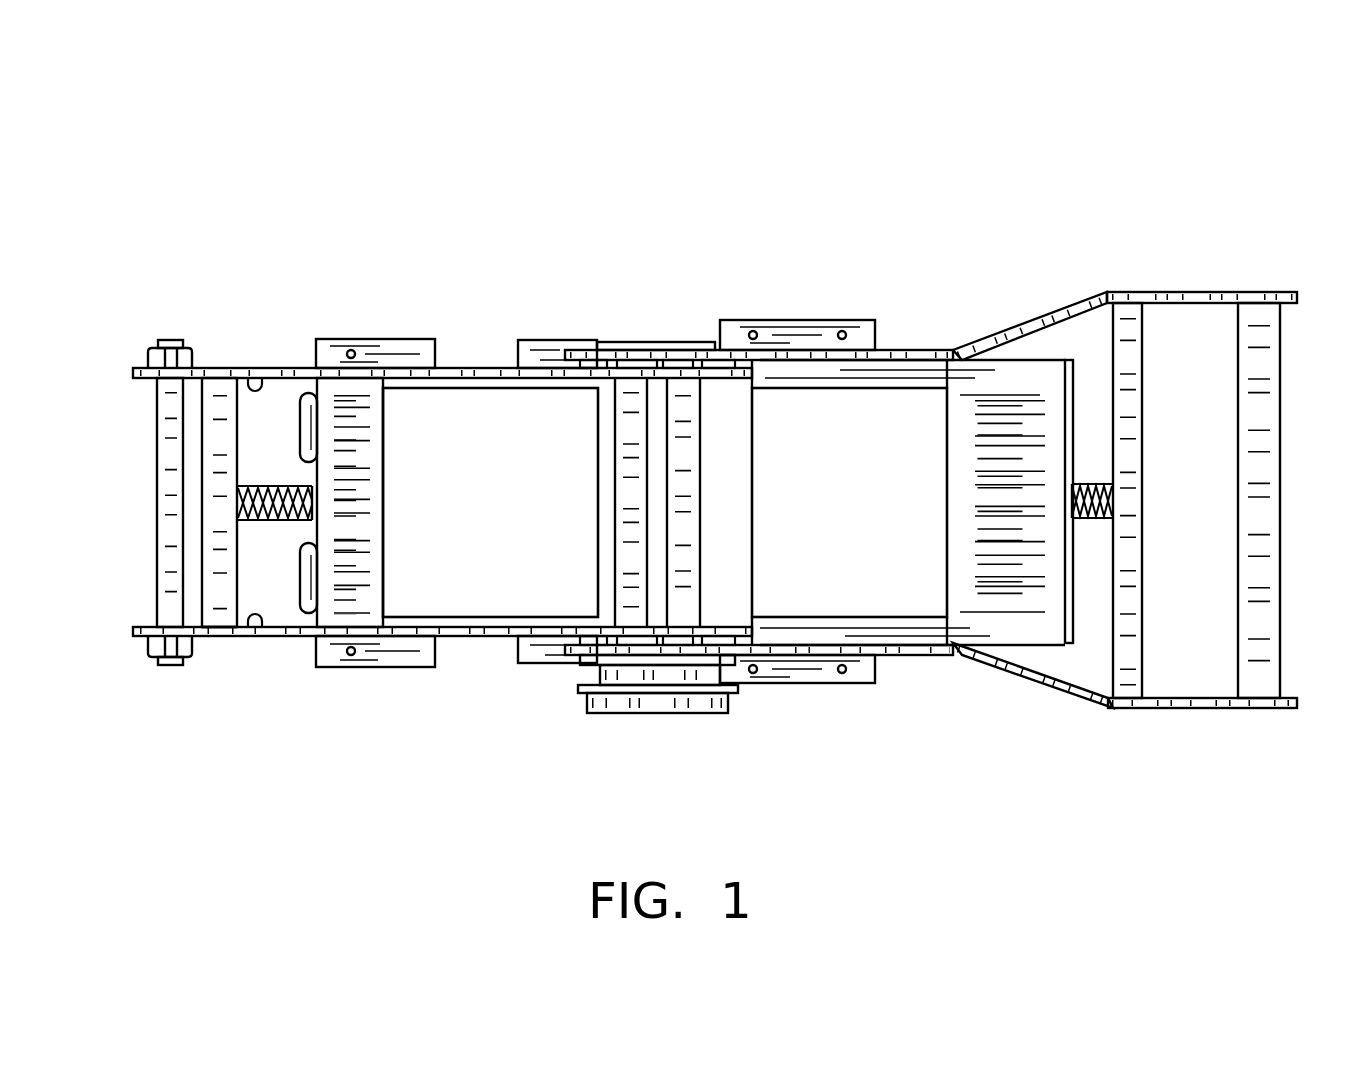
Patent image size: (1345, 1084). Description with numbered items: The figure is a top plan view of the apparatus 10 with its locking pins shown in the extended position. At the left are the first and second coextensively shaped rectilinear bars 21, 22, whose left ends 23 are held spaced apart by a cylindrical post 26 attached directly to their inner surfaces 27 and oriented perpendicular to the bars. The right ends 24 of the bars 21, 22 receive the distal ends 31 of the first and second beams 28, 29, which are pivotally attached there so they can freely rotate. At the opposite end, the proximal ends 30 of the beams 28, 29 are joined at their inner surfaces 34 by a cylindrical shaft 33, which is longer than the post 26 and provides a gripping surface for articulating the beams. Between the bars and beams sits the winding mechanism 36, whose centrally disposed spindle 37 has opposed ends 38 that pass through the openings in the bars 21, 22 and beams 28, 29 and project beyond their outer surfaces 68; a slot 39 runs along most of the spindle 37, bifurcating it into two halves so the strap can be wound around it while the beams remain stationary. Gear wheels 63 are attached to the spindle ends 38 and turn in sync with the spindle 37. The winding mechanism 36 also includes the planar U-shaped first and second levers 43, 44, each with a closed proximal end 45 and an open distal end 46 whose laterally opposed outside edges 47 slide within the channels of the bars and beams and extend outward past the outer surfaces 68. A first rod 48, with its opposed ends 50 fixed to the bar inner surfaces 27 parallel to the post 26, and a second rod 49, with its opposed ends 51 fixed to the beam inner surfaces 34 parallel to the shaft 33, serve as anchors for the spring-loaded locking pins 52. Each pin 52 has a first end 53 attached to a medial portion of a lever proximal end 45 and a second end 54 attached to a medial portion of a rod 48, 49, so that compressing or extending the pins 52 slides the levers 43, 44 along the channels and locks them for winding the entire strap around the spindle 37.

The apparatus 10 is at (222, 196).
The first bar 21 is at (233, 368).
The second bar 22 is at (232, 640).
The left ends 23 is at (133, 368).
The right ends 24 is at (742, 375).
The cylindrical post 26 is at (160, 497).
The inner surfaces 27 is at (257, 378).
The first beam 28 is at (1072, 310).
The second beam 29 is at (1077, 690).
The proximal ends 30 is at (1297, 295).
The distal ends 31 is at (560, 355).
The cylindrical shaft 33 is at (1268, 545).
The inner surfaces 34 is at (1222, 305).
The winding mechanism 36 is at (578, 733).
The spindle 37 is at (655, 528).
The opposed ends 38 is at (657, 342).
The slot 39 is at (618, 450).
The first lever 43 is at (373, 607).
The second lever 44 is at (990, 612).
The closed proximal ends 45 is at (320, 620).
The open distal ends 46 is at (385, 550).
The outside edges 47 is at (520, 355).
The first rod 48 is at (215, 613).
The second rod 49 is at (1130, 315).
The opposed ends 50 is at (213, 390).
The opposed ends 51 is at (1135, 688).
The spring-loaded locking pins 52 is at (265, 488).
The first ends 53 is at (310, 500).
The second ends 54 is at (245, 520).
The gear wheels 63 is at (458, 650).
The outer surfaces 68 is at (470, 370).